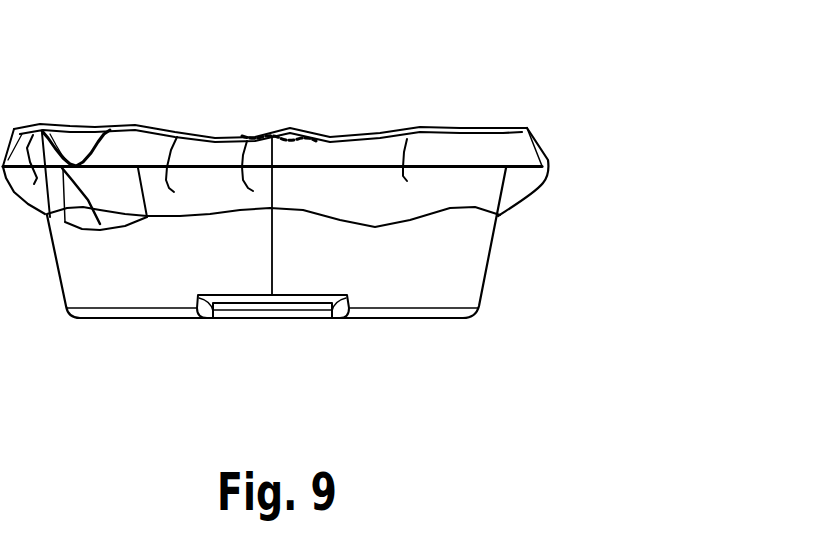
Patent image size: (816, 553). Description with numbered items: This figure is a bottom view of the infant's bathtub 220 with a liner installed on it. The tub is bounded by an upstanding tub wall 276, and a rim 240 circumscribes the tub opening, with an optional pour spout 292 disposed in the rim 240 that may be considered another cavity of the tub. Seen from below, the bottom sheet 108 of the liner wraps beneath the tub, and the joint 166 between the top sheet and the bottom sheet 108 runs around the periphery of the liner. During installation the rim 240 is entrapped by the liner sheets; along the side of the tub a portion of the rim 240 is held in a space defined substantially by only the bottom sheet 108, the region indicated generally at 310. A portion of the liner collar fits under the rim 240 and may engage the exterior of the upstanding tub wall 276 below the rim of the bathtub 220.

The bottom sheet 108 is at (207, 207).
The joint 166 is at (217, 131).
The bathtub 220 is at (389, 358).
The rim 240 is at (517, 153).
The upstanding tub wall 276 is at (361, 260).
The pour spout 292 is at (78, 153).
The area of rim entrapment by bottom sheet 310 is at (570, 153).